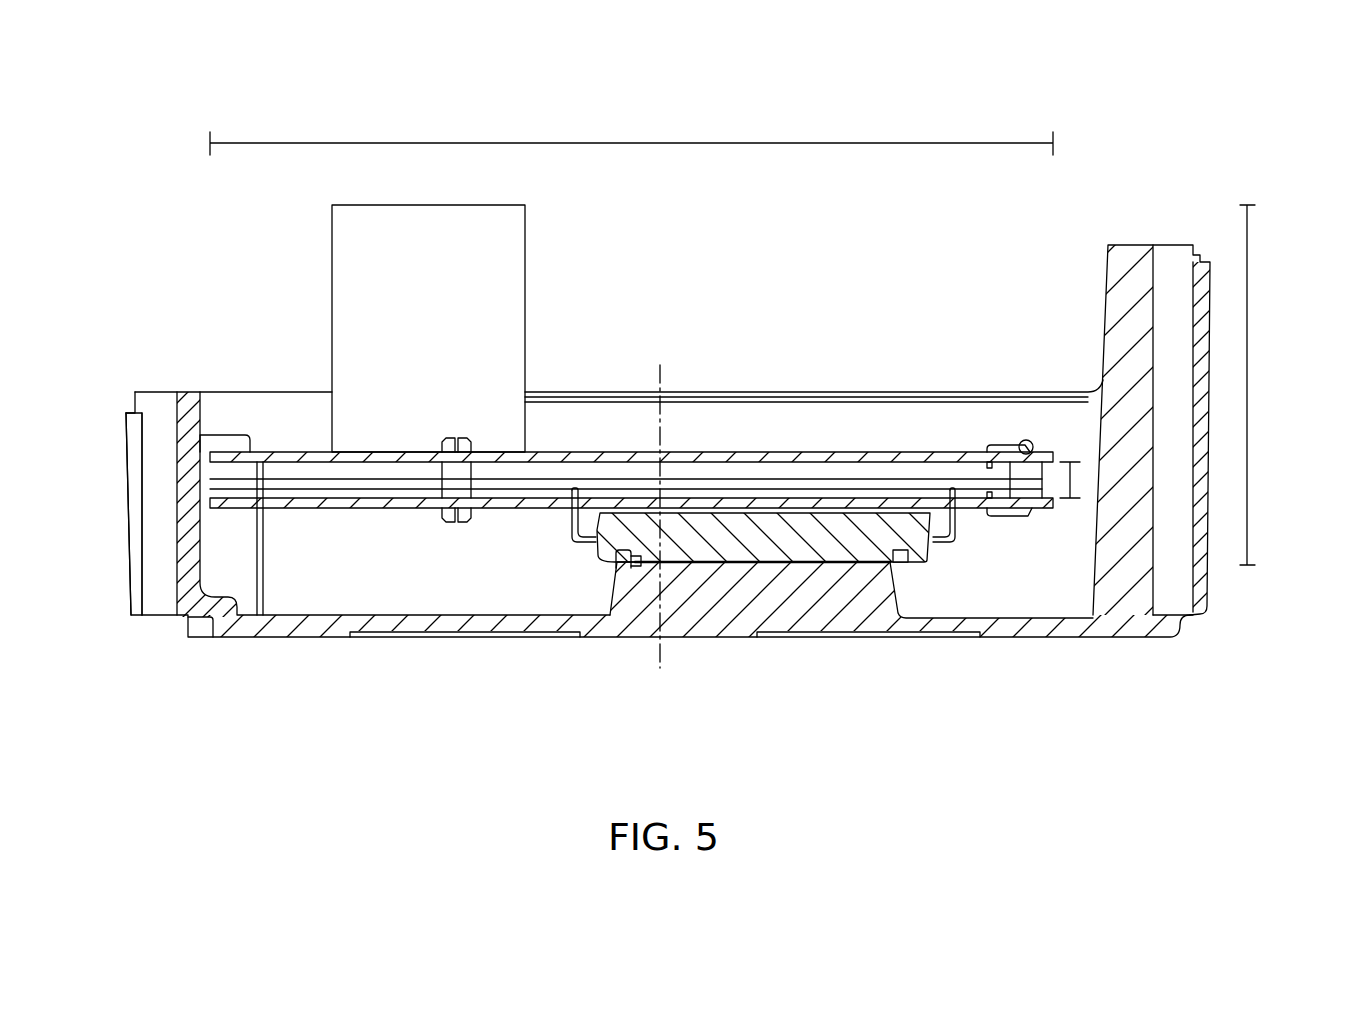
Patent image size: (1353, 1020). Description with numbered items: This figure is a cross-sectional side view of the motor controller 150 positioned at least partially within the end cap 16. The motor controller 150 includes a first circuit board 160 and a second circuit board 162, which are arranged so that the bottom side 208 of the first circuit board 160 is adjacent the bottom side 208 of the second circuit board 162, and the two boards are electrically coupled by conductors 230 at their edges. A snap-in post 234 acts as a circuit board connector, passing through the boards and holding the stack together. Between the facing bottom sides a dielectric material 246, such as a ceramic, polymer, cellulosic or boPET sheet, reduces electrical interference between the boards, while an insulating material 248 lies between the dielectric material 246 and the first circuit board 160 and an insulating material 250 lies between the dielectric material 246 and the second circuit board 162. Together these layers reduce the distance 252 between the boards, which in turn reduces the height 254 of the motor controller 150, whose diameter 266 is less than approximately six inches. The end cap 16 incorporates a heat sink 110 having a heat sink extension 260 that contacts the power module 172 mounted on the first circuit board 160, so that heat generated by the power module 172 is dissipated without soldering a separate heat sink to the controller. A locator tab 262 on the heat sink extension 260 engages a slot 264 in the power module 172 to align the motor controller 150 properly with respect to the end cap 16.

The heat sink 110 is at (854, 656).
The end cap 16 is at (1107, 268).
The motor controller 150 is at (819, 448).
The first circuit board 160 is at (320, 510).
The second circuit board 162 is at (297, 452).
The power module 172 is at (600, 553).
The bottom side 208 is at (238, 492).
The conductors 230 is at (1013, 516).
The snap-in post 234 is at (473, 440).
The dielectric material 246 is at (288, 490).
The insulating material 248 is at (410, 489).
The insulating material 250 is at (370, 473).
The distance 252 is at (1075, 480).
The height 254 is at (1262, 386).
The heat sink extension 260 is at (898, 600).
The locator tab 262 is at (617, 563).
The slot 264 is at (648, 563).
The diameter 266 is at (637, 141).